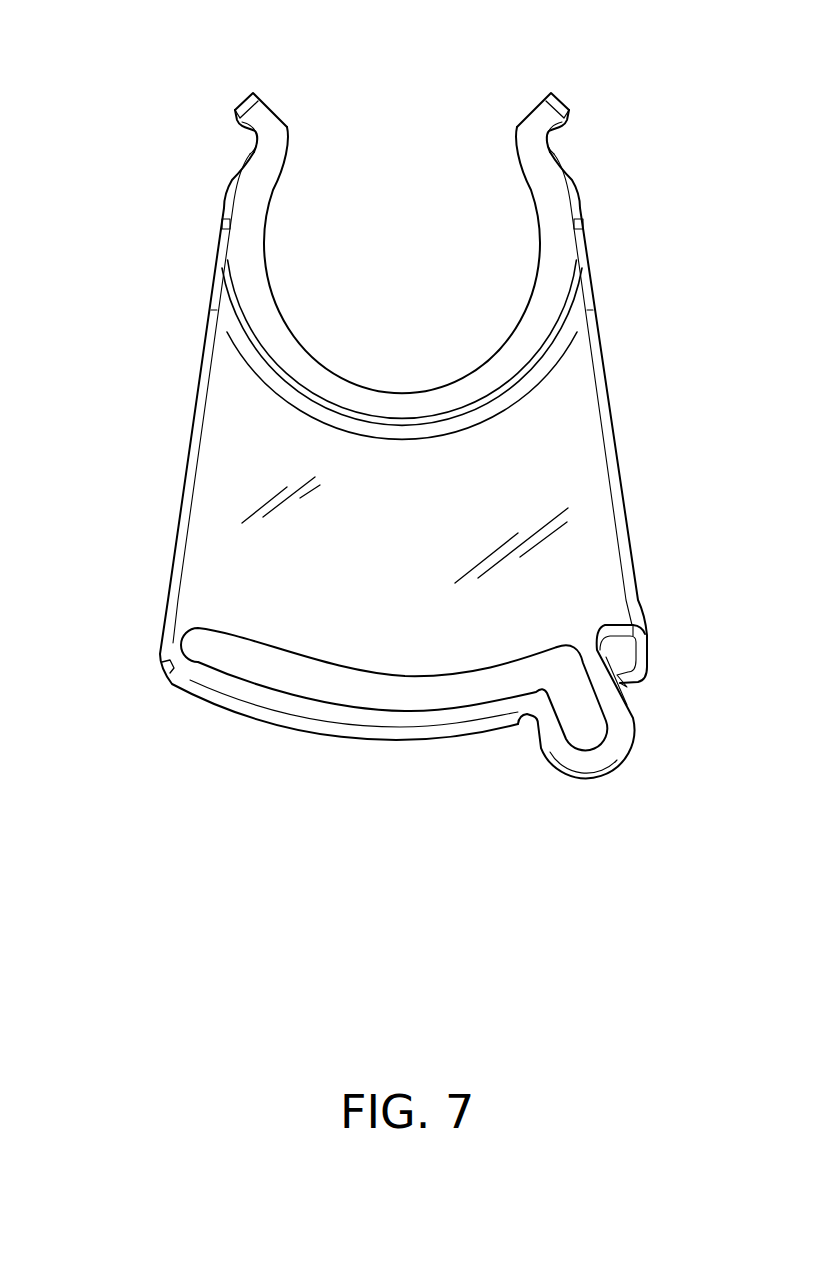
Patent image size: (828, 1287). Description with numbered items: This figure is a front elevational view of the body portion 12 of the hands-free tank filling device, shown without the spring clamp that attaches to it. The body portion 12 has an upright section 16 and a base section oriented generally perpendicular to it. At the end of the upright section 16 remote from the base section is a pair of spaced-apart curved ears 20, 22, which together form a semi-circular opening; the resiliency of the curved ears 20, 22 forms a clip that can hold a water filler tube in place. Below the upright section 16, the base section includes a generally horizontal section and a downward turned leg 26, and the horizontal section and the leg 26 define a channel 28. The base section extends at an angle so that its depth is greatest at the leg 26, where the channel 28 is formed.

The body portion 12 is at (188, 429).
The upright section 16 is at (225, 555).
The curved ear 20 is at (534, 123).
The curved ear 22 is at (270, 127).
The leg 26 is at (617, 765).
The channel 28 is at (250, 663).